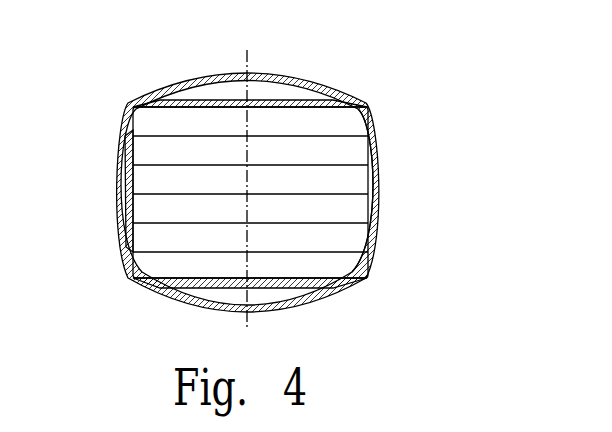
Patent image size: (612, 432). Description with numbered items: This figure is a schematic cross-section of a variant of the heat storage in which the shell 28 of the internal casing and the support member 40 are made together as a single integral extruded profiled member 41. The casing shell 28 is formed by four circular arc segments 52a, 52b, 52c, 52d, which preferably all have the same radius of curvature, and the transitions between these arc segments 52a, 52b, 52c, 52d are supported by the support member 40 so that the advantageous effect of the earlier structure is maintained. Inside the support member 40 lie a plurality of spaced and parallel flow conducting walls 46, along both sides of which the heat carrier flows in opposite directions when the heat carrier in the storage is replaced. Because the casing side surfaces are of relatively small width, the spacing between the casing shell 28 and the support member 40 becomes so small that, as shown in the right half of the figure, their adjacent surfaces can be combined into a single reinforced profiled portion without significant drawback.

The shell 28 is at (268, 77).
The support member 40 is at (213, 103).
The integral extruded profiled member 41 is at (387, 130).
The flow conducting wall 46 is at (157, 135).
The circular arc segment 52a is at (303, 80).
The circular arc segment 52b is at (380, 230).
The circular arc segment 52c is at (303, 305).
The circular arc segment 52d is at (115, 230).